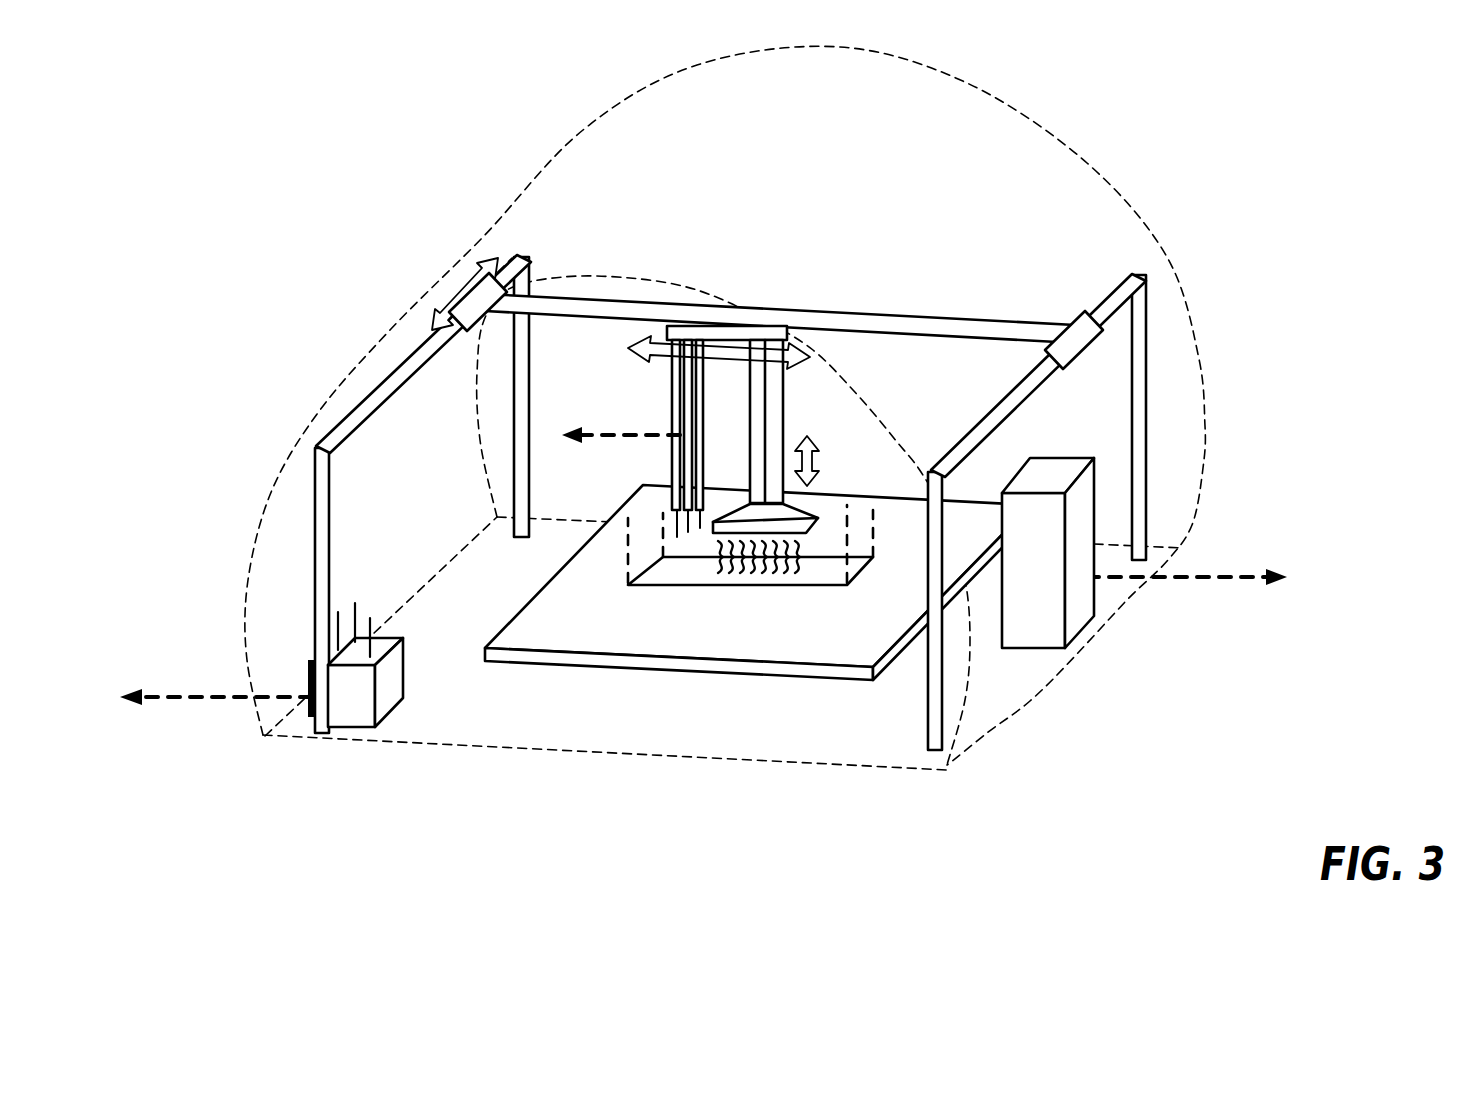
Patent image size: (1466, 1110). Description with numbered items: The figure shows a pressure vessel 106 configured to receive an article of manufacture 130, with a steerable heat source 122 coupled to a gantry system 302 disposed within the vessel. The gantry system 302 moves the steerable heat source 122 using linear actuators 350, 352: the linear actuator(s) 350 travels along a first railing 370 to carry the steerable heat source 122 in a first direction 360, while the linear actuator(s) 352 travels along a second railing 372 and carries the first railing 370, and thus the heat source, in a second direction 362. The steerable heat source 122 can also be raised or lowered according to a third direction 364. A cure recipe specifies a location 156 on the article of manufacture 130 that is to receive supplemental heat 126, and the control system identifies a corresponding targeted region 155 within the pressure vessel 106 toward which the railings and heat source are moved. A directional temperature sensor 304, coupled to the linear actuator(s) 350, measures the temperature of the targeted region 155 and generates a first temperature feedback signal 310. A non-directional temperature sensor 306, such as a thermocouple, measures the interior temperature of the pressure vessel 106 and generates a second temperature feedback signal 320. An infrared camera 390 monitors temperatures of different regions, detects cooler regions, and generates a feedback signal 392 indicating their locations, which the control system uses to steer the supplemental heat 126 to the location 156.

The pressure vessel 106 is at (1128, 200).
The gantry system 302 is at (1160, 359).
The directional temperature sensor 304 is at (672, 378).
The non-directional temperature sensor 306 is at (362, 713).
The first temperature feedback signal 310 is at (615, 433).
The second temperature feedback signal 320 is at (197, 692).
The linear actuator(s) 350 is at (758, 337).
The linear actuator(s) 352 is at (470, 297).
The first direction 360 is at (628, 350).
The second direction 362 is at (485, 272).
The third direction 364 is at (812, 458).
The first railing 370 is at (1025, 328).
The second railing 372 is at (348, 430).
The feedback signal 392 is at (1205, 575).
The steerable heat source 122 is at (787, 407).
The supplemental heat 126 is at (713, 567).
The article of manufacture 130 is at (868, 630).
The targeted region 155 is at (627, 553).
The location 156 is at (728, 590).
The infrared camera 390 is at (1083, 597).